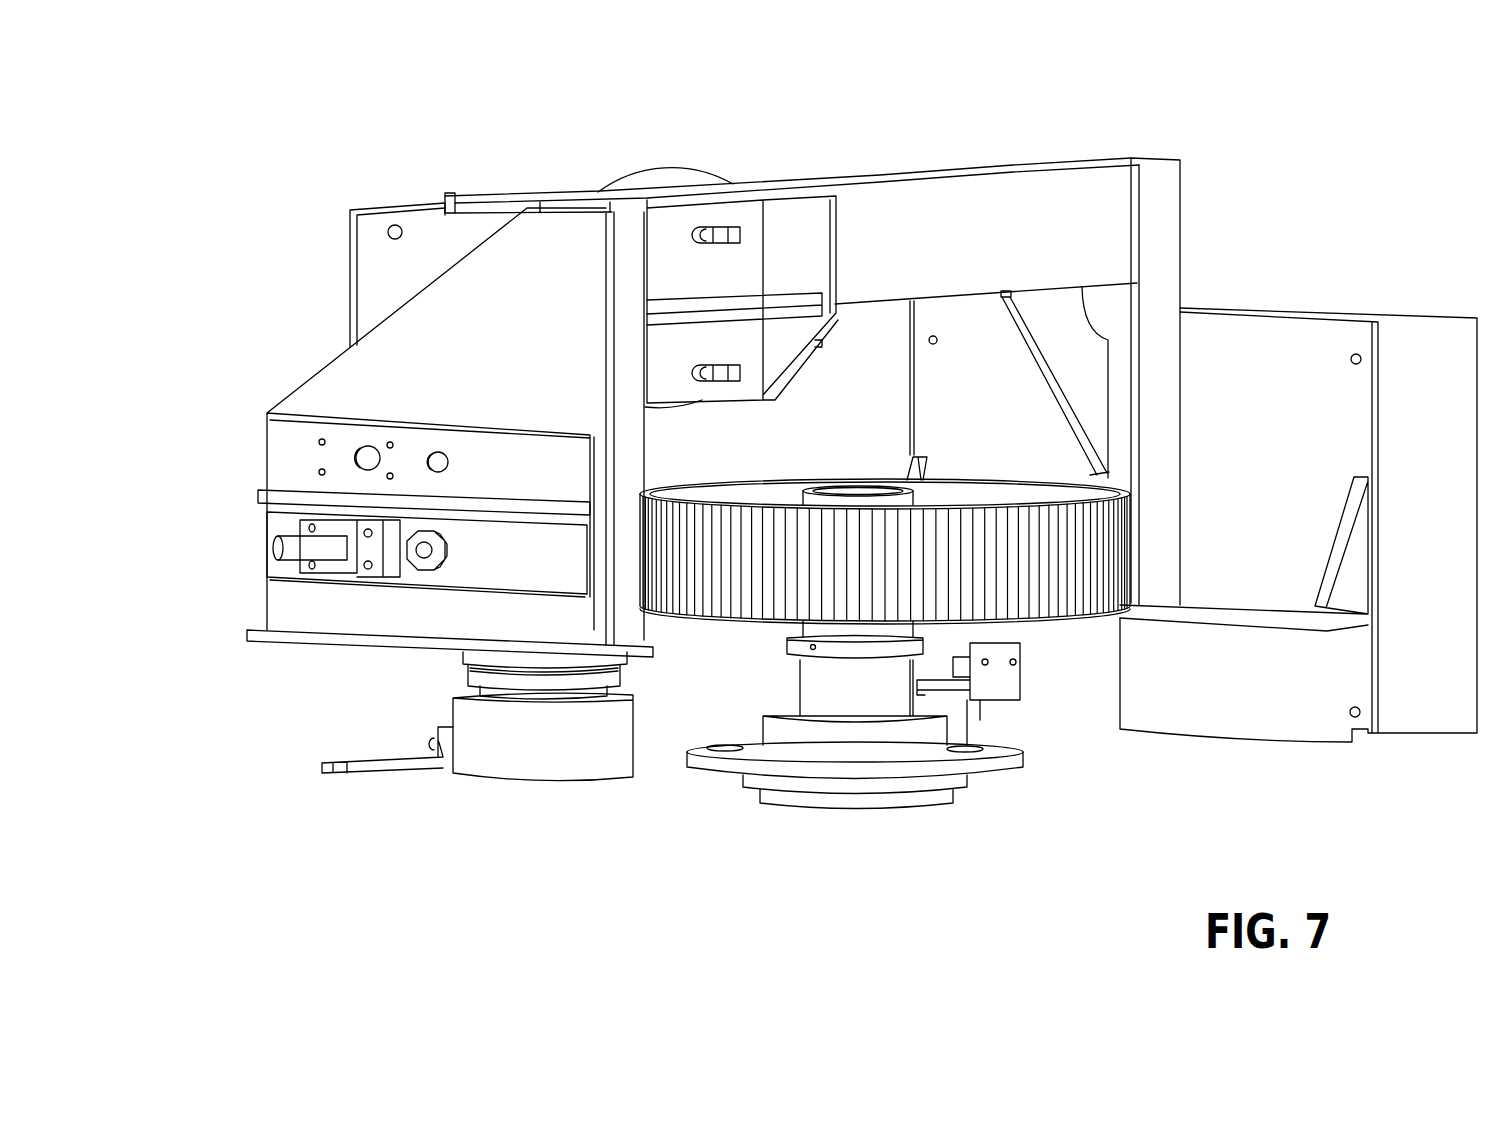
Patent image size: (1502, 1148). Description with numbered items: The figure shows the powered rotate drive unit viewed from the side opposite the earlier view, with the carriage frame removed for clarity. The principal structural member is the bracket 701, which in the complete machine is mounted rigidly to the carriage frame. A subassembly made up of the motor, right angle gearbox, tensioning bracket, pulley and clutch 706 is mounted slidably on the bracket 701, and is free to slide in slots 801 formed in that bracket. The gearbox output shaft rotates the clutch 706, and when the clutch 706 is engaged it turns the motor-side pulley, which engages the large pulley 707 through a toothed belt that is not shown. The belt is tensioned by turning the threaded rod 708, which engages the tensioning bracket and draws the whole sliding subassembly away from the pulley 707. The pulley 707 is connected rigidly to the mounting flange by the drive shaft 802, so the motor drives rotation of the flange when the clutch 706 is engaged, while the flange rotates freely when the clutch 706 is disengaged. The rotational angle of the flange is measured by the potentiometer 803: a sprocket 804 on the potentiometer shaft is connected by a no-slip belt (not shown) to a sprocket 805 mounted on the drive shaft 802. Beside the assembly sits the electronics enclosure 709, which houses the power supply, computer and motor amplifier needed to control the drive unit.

The bracket 701 is at (940, 202).
The clutch 706 is at (543, 760).
The pulley 707 is at (1000, 497).
The threaded rod 708 is at (298, 548).
The electronics enclosure 709 is at (1405, 314).
The slots 801 is at (723, 367).
The drive shaft 802 is at (873, 690).
The potentiometer 803 is at (980, 713).
The sprocket 804 is at (967, 670).
The sprocket 805 is at (802, 667).